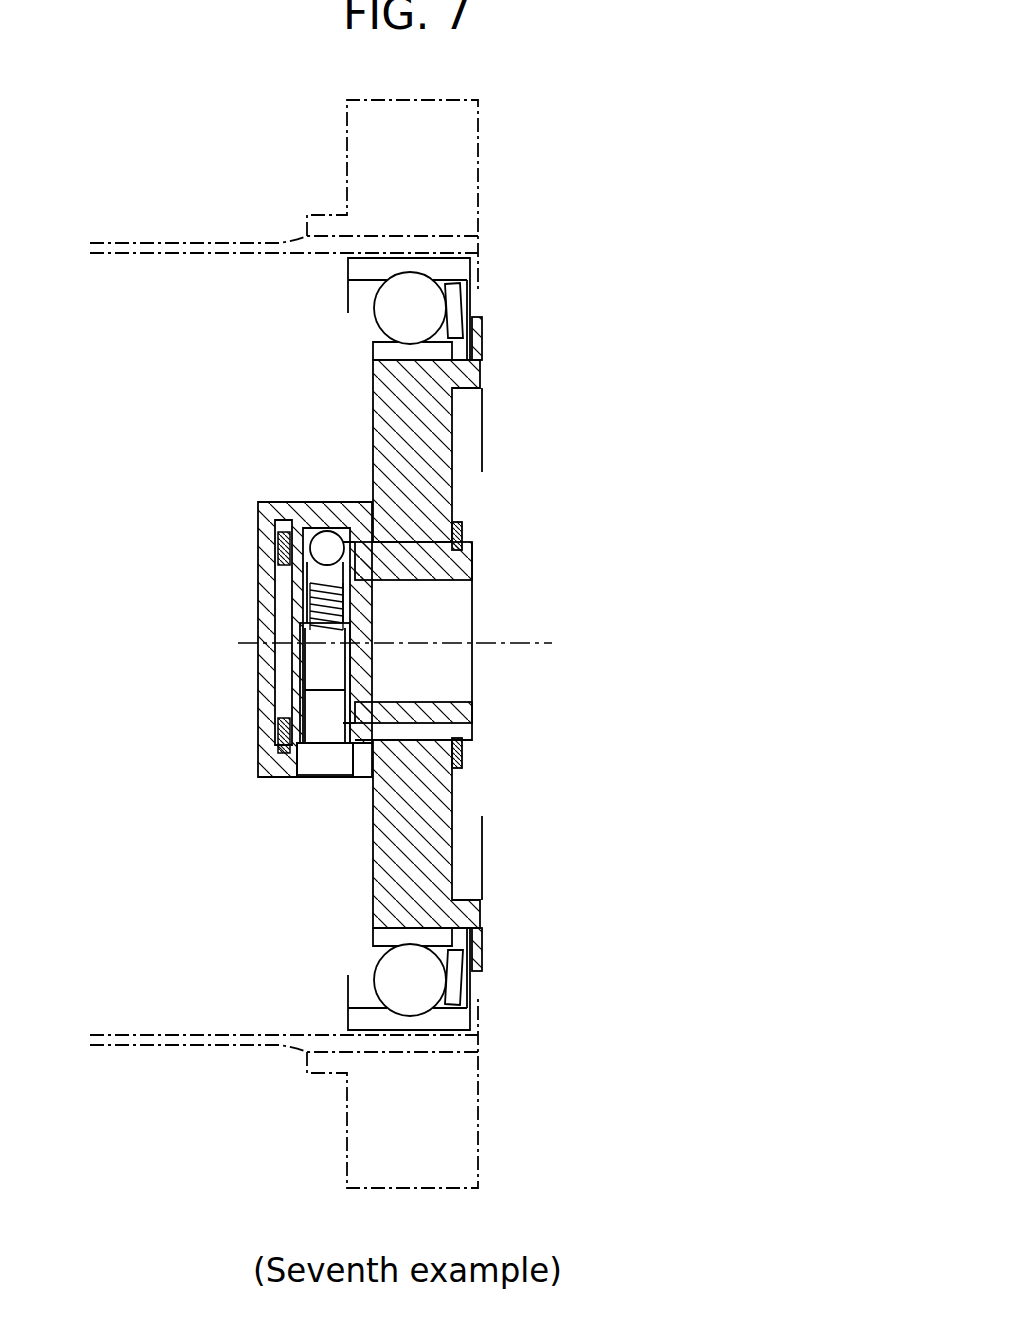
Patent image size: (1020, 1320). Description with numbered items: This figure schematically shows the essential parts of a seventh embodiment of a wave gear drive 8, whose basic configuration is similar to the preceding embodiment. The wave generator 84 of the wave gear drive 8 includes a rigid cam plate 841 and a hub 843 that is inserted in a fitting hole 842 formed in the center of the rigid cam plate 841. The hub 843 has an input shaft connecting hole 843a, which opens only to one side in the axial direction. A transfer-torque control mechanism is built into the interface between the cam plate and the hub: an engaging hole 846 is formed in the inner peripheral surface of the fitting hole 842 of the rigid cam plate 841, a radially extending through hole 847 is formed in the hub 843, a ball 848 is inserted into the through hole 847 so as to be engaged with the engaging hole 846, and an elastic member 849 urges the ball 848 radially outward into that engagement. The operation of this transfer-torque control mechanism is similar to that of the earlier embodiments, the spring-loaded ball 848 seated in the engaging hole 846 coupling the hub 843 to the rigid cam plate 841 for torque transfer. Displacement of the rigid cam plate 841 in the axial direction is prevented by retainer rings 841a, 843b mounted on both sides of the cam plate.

The wave gear drive 8 is at (593, 273).
The wave generator 84 is at (487, 508).
The rigid cam plate 841 is at (388, 408).
The retainer ring 841a is at (282, 733).
The fitting hole 842 is at (392, 547).
The hub 843 is at (462, 580).
The input shaft connecting hole 843a is at (470, 590).
The retainer ring 843b is at (460, 762).
The engaging hole 846 is at (307, 550).
The through hole 847 is at (318, 678).
The ball 848 is at (322, 523).
The elastic member 849 is at (312, 617).